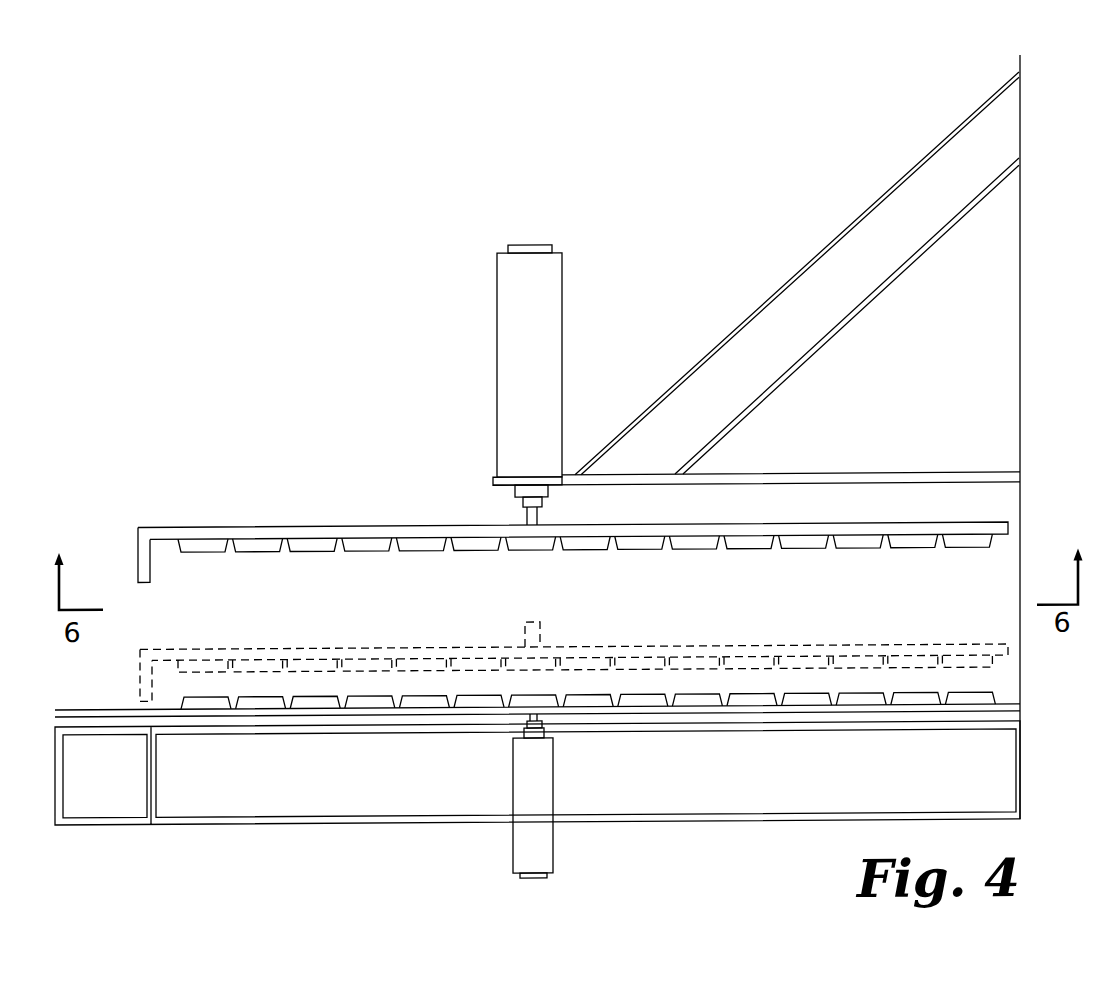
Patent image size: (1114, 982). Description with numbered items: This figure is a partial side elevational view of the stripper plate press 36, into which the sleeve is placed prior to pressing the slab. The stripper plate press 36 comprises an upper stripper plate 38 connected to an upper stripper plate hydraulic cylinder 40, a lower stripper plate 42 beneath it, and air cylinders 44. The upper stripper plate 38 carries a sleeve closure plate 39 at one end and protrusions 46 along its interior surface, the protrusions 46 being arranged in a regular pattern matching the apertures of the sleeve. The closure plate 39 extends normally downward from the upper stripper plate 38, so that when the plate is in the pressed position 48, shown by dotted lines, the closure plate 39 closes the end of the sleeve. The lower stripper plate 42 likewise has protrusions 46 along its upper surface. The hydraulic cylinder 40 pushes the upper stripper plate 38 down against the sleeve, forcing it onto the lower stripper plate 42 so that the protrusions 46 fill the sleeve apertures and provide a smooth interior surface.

The stripper plate press 36 is at (416, 415).
The upper stripper plate 38 is at (293, 530).
The sleeve closure plate 39 is at (138, 549).
The upper stripper plate hydraulic cylinder 40 is at (562, 343).
The lower stripper plate 42 is at (400, 720).
The air cylinders 44 is at (553, 855).
The protrusions 46 is at (642, 700).
The pressed position 48 is at (400, 651).